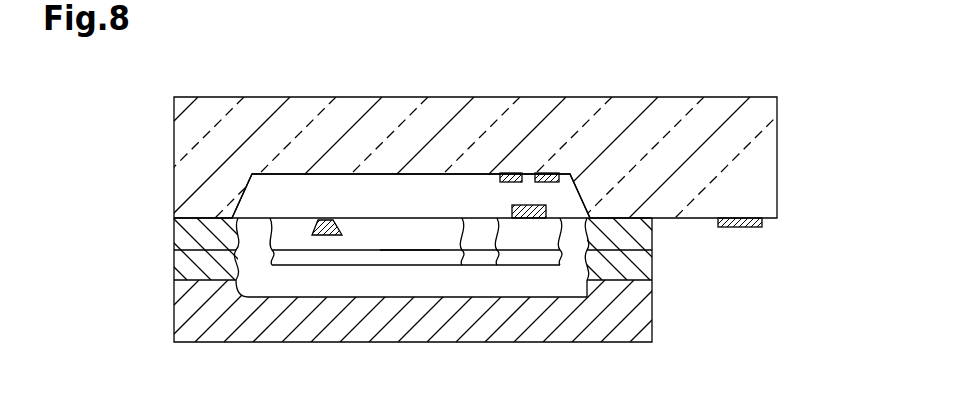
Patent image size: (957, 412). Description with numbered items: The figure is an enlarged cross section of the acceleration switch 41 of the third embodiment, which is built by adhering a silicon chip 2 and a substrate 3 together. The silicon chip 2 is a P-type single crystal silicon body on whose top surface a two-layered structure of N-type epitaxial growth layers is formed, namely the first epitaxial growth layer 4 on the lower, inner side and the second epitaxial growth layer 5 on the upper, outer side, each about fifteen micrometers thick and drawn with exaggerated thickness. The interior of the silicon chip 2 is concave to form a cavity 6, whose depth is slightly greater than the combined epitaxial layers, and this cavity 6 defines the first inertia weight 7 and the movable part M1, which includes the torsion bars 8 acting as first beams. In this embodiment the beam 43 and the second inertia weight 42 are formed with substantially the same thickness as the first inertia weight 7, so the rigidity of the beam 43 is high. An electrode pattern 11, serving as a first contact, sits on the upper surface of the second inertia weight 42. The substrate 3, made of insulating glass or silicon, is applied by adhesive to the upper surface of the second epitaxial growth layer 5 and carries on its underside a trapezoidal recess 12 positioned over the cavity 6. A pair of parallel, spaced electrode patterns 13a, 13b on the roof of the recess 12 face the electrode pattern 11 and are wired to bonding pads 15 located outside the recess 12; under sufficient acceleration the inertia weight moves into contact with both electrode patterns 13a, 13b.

The acceleration switch 41 is at (221, 39).
The substrate 3 is at (777, 143).
The recess 12 is at (252, 178).
The electrode pattern 13a is at (512, 171).
The electrode pattern 13b is at (552, 171).
The electrode pattern 11 is at (525, 201).
The torsion bars 8 is at (323, 222).
The bonding pads 15 is at (752, 227).
The second epitaxial growth layer 5 is at (651, 230).
The first epitaxial growth layer 4 is at (651, 260).
The silicon chip 2 is at (651, 310).
The cavity 6 is at (410, 290).
The movable part M1 is at (312, 266).
The first inertia weight 7 is at (403, 237).
The beam 43 is at (480, 258).
The second inertia weight 42 is at (522, 258).